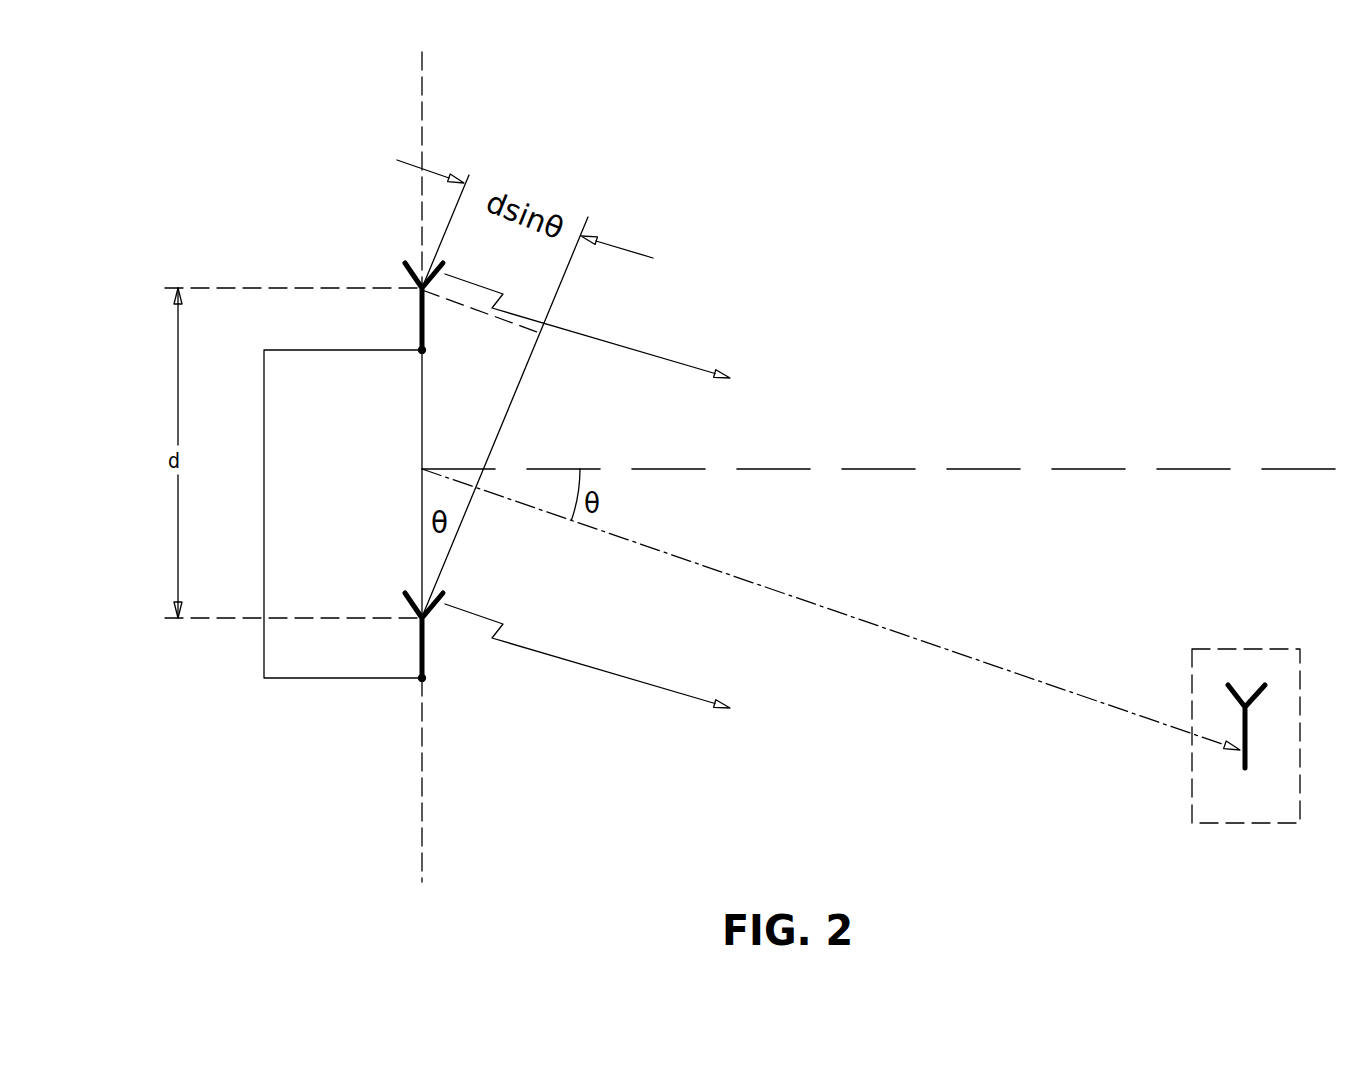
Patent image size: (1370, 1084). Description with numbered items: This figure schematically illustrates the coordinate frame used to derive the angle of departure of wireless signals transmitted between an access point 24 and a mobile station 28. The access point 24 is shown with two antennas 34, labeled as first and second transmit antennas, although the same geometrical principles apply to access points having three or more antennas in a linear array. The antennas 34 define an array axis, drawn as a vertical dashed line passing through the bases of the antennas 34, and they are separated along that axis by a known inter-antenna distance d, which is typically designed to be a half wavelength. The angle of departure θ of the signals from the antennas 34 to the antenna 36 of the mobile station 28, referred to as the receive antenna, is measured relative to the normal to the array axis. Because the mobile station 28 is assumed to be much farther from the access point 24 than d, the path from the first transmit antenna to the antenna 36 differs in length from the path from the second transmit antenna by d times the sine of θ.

The access point 24 is at (264, 413).
The antennas 34 is at (405, 263).
The mobile station 28 is at (1270, 649).
The antenna 36 is at (1228, 686).